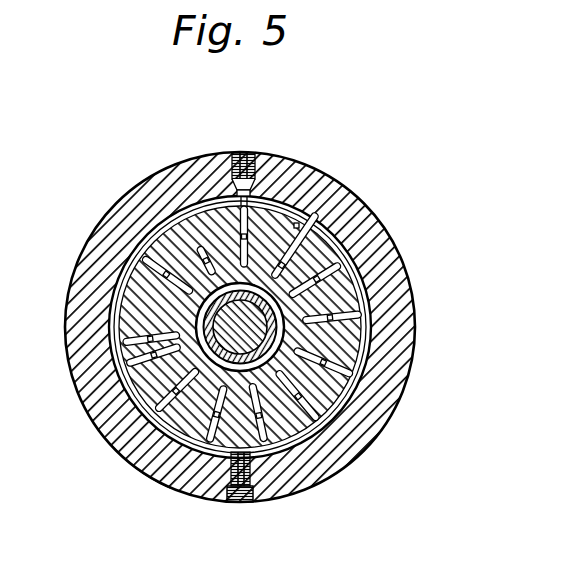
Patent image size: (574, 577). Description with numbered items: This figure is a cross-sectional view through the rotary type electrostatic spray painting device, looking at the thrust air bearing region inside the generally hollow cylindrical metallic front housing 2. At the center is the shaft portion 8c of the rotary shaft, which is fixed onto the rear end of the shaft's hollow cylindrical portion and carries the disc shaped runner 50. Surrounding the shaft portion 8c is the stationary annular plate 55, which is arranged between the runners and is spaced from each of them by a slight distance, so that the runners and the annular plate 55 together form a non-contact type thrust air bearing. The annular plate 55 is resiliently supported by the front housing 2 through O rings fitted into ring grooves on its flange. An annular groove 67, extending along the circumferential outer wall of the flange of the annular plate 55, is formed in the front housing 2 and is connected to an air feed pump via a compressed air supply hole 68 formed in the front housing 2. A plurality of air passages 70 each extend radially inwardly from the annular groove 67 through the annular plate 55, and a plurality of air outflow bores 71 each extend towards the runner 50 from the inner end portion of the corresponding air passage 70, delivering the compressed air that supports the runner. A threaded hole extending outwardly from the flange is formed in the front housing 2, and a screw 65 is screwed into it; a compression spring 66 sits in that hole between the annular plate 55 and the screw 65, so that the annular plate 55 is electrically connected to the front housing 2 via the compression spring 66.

The front housing 2 is at (370, 440).
The shaft portion 8c is at (143, 462).
The runner 50 is at (268, 334).
The stationary annular plate 55 is at (378, 272).
The screw 65 is at (243, 496).
The compression spring 66 is at (250, 484).
The annular groove 67 is at (313, 220).
The compressed air supply hole 68 is at (252, 157).
The air passage 70 is at (232, 224).
The air outflow bore 71 is at (203, 256).